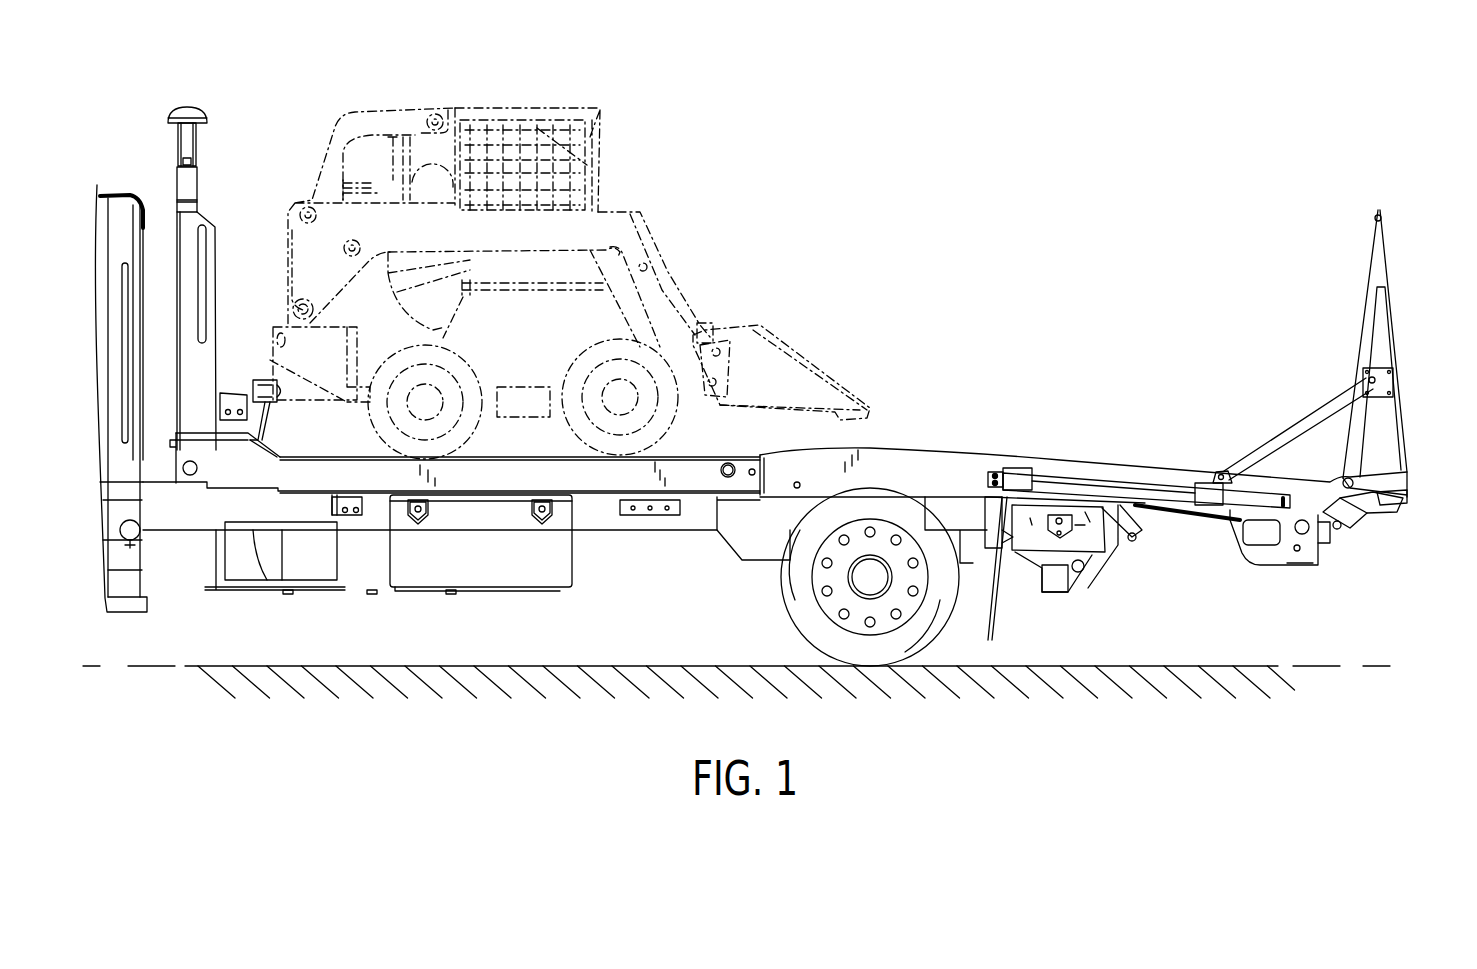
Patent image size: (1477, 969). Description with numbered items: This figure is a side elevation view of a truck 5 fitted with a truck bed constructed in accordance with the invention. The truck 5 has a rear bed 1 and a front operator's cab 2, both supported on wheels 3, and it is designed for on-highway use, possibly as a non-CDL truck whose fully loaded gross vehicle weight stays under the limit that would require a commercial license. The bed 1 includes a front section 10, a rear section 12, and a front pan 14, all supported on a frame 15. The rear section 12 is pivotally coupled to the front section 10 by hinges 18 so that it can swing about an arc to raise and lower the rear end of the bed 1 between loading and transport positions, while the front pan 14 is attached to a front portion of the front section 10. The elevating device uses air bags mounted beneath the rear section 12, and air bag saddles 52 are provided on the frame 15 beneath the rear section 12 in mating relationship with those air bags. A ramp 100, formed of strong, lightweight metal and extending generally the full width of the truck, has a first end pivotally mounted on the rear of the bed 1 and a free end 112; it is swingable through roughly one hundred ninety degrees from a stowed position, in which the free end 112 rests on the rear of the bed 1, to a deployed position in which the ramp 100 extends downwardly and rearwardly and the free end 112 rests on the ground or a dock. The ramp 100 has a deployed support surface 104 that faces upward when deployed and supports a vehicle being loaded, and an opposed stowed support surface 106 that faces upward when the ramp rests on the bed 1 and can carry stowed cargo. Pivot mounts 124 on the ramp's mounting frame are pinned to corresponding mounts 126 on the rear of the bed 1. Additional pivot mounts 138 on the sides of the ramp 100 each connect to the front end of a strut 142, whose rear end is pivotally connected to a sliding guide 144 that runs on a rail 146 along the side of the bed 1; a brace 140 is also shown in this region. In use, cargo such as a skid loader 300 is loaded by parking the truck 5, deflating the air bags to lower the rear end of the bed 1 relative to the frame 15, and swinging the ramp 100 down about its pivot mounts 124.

The rear bed 1 is at (1100, 435).
The front operator's cab 2 is at (120, 197).
The wheels 3 is at (805, 607).
The truck 5 is at (1082, 225).
The front section 10 is at (365, 468).
The rear section 12 is at (1152, 466).
The front pan 14 is at (208, 447).
The frame 15 is at (590, 485).
The hinges 18 is at (762, 478).
The air bag saddles 52 is at (1122, 545).
The ramp 100 is at (1388, 247).
The first support surface 104 is at (1372, 265).
The second support surface 106 is at (1405, 430).
The free end 112 is at (1380, 210).
The pivot mounts 124 is at (1360, 490).
The mounts 126 is at (1348, 488).
The additional pivot mounts 138 is at (1360, 378).
The diagonal brace 140 is at (1296, 430).
The strut 142 is at (1219, 471).
The sliding guide 144 is at (1208, 505).
The rail 146 is at (1064, 482).
The skid loader 300 is at (667, 272).